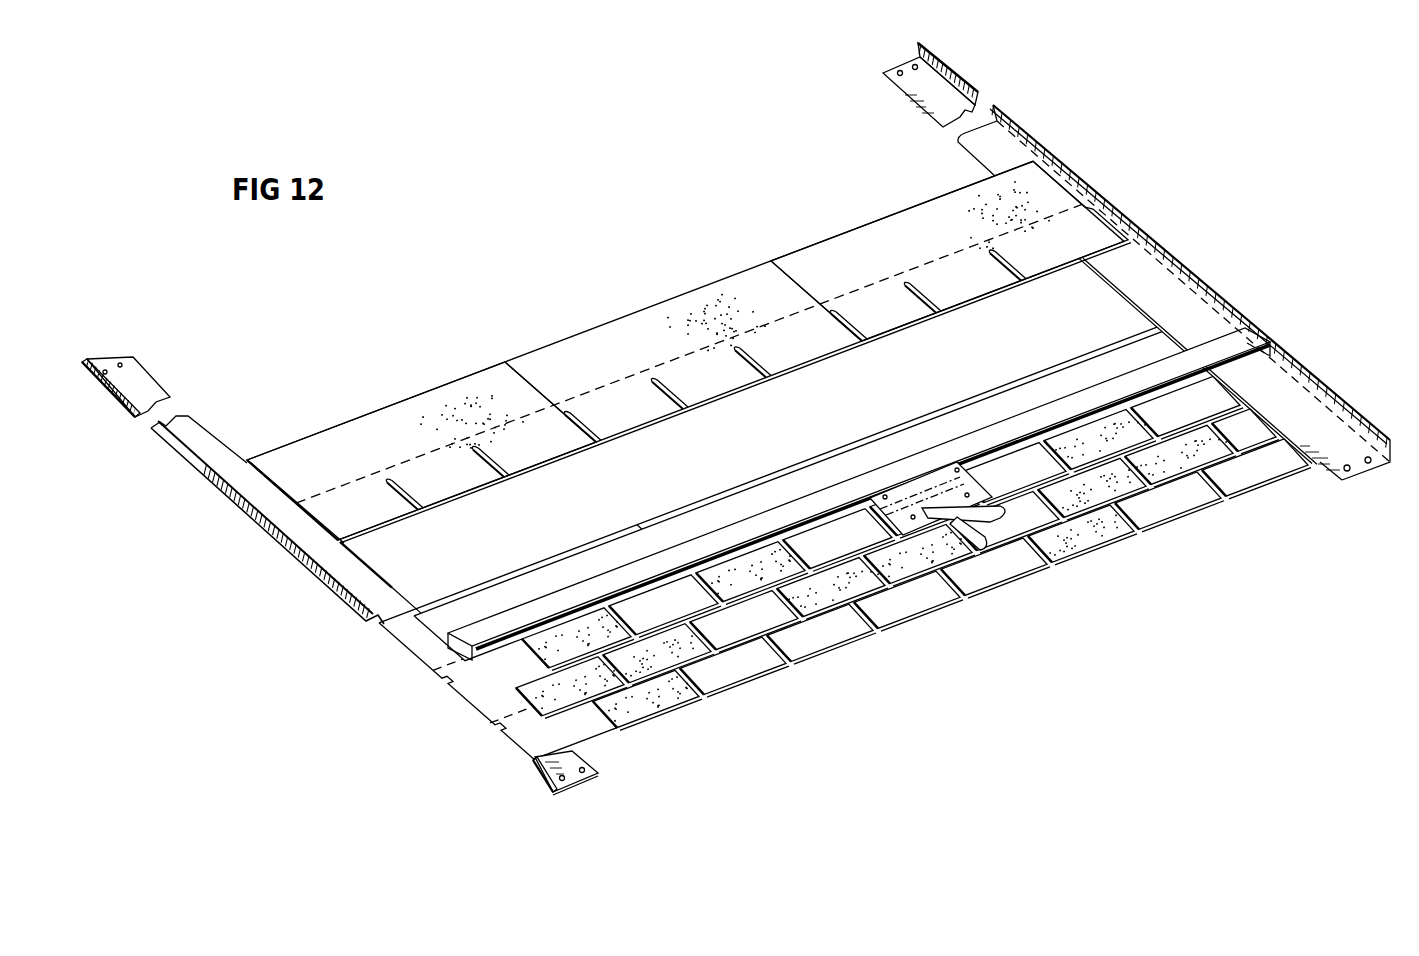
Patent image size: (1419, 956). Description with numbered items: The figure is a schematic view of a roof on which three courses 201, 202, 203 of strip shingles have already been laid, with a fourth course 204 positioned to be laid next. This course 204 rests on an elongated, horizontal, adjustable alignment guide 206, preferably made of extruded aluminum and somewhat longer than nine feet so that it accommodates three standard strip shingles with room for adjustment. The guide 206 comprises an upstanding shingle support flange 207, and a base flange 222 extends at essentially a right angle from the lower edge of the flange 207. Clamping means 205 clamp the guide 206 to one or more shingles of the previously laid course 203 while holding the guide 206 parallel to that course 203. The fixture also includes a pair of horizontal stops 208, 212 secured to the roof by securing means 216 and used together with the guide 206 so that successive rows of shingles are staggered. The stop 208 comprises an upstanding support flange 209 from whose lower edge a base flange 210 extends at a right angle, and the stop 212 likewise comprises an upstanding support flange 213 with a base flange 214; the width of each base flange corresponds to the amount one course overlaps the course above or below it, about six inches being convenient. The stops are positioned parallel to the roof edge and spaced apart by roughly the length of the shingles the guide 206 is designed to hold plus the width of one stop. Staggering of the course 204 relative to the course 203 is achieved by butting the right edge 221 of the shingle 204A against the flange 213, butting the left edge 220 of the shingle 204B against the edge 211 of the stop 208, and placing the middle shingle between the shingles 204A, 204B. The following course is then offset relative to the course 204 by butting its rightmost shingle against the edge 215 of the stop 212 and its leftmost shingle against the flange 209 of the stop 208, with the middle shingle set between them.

The first course of strip shingles 201 is at (749, 677).
The second course of strip shingles 202 is at (754, 632).
The third course of strip shingles 203 is at (856, 554).
The fourth course of shingles 204 is at (595, 345).
The rightmost shingle of fourth course 204A is at (833, 260).
The leftmost shingle of fourth course 204B is at (372, 428).
The clamping means 205 is at (982, 532).
The alignment guide 206 is at (858, 479).
The shingle support flange 207 is at (738, 548).
The horizontal stop 208 is at (572, 786).
The upstanding support flange of stop 209 is at (538, 780).
The base flange of stop 210 is at (205, 446).
The edge of stop 211 is at (588, 764).
The horizontal stop 212 is at (1363, 478).
The upstanding support flange of stop 213 is at (1312, 386).
The base flange of stop 214 is at (1330, 472).
The edge of stop 215 is at (903, 96).
The securing means 216 is at (898, 70).
The left edge of shingle 220 is at (265, 483).
The right edge of shingle 221 is at (1068, 182).
The base flange of guide 222 is at (973, 446).